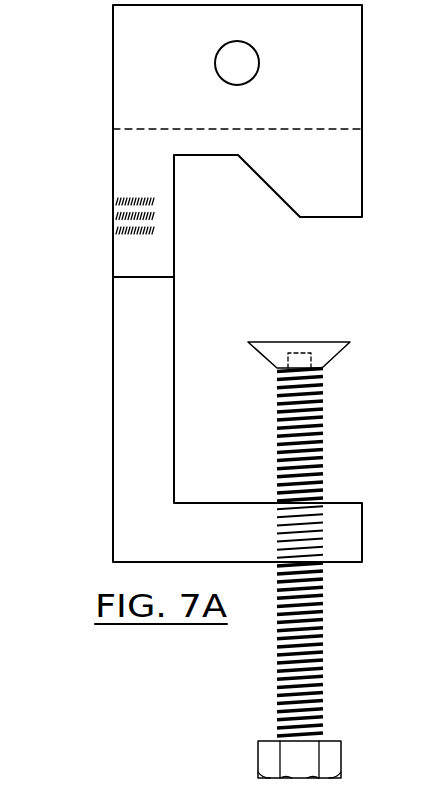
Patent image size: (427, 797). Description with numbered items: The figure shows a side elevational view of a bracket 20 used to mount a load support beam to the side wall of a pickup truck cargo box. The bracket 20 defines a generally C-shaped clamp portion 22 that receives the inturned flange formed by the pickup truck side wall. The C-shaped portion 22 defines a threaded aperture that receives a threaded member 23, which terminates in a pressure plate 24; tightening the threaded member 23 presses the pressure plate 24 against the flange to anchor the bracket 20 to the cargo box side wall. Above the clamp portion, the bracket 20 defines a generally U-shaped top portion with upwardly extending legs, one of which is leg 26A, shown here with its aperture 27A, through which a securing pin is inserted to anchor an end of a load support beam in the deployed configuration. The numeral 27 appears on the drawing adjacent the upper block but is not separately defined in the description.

The bracket 20 is at (219, 283).
The C-shaped clamp portion 22 is at (123, 392).
The threaded member 23 is at (334, 560).
The pressure plate 24 is at (334, 369).
The upwardly extending leg 26A is at (120, 38).
The block portion 27 is at (268, 170).
The aperture 27A is at (247, 67).